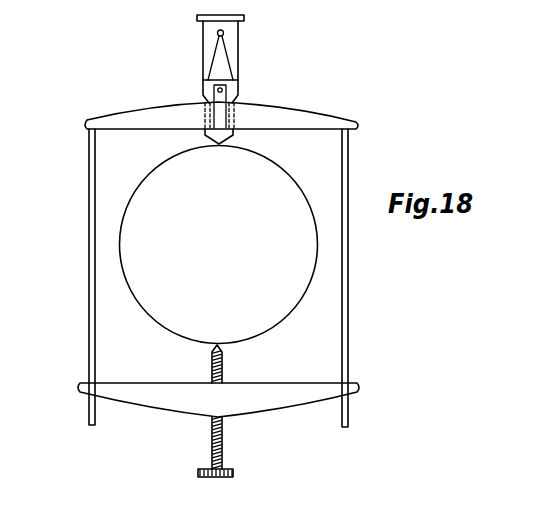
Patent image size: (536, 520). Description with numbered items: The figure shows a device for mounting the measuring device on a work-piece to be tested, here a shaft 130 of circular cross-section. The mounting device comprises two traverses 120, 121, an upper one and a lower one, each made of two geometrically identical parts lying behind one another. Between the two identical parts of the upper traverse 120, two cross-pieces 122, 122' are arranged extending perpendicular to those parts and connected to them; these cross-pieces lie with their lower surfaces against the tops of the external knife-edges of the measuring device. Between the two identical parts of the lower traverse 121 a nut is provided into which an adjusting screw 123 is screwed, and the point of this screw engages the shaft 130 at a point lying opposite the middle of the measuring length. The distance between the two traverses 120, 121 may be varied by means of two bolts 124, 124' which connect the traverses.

The upper traverse 120 is at (285, 118).
The lower traverse 121 is at (268, 400).
The cross-piece 122 is at (200, 79).
The cross-piece 122' is at (260, 92).
The adjusting screw 123 is at (212, 433).
The bolt 124 is at (69, 277).
The bolt 124' is at (377, 278).
The shaft 130 is at (123, 215).